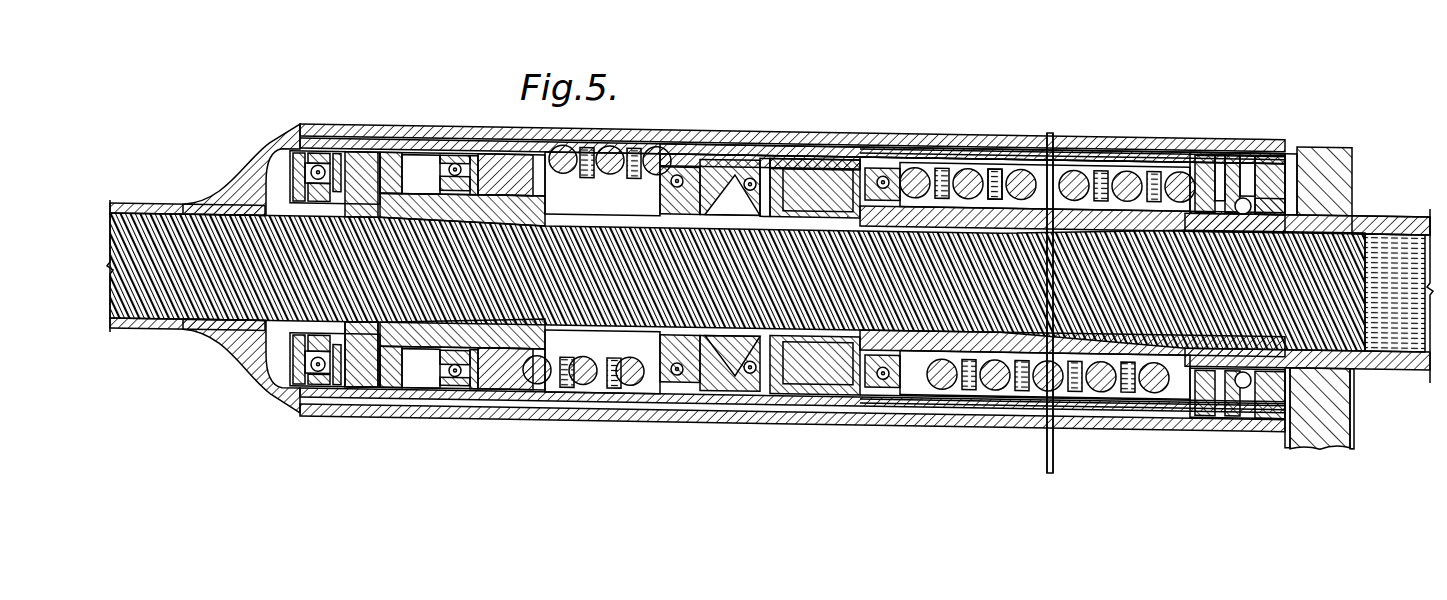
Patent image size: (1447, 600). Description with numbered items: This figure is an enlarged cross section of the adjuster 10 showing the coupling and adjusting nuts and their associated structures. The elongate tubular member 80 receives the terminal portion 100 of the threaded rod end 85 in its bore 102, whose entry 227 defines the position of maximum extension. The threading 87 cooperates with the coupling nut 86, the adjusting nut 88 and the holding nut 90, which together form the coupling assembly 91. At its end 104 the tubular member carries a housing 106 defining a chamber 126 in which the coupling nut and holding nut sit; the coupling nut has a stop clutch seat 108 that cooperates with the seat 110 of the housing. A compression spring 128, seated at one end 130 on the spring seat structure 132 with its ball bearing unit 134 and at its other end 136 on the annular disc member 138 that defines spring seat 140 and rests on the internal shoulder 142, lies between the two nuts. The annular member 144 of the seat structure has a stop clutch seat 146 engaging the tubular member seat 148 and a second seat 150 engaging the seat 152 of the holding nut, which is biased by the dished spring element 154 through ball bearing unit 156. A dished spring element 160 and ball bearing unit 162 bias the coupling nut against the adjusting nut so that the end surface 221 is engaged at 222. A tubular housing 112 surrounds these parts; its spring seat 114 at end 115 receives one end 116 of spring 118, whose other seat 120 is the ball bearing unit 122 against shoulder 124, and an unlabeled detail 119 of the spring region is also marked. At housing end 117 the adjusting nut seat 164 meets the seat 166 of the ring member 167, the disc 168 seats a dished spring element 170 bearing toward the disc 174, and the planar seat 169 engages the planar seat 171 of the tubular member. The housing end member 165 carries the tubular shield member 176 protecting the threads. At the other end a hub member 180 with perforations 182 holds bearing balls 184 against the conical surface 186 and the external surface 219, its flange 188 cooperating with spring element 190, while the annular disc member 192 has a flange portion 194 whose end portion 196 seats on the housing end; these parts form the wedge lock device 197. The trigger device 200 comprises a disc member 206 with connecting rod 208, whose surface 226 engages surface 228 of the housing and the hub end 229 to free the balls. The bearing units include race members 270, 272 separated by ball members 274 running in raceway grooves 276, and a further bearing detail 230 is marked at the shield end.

The adjuster 10 is at (204, 56).
The tubular member 80 is at (1362, 214).
The rod member end 85 is at (1352, 396).
The coupling nut 86 is at (388, 112).
The threading 87 is at (232, 322).
The adjusting nut 88 is at (245, 180).
The holding nut 90 is at (735, 128).
The coupling assembly 91 is at (812, 100).
The terminal portion 100 is at (1395, 255).
The bore 102 is at (1300, 228).
The tubular member end 104 is at (856, 130).
The housing 106 is at (665, 128).
The stop clutch seat 108 is at (357, 112).
The stop clutch seat 110 is at (330, 112).
The tubular housing 112 is at (950, 130).
The spring seat 114 is at (1165, 135).
The housing end 115 is at (1240, 135).
The spring end 116 is at (1160, 142).
The housing end 117 is at (310, 112).
The spring 118 is at (1075, 130).
The ball bearing 119 is at (930, 130).
The spring seat 120 is at (912, 408).
The ball bearing unit 122 is at (872, 420).
The shoulder 124 is at (845, 420).
The chamber 126 is at (582, 422).
The compression spring 128 is at (612, 148).
The spring end 130 is at (660, 128).
The spring seat structure 132 is at (695, 128).
The ball bearing unit 134 is at (700, 400).
The spring end 136 is at (500, 420).
The annular disc member 138 is at (472, 420).
The spring seat 140 is at (498, 112).
The internal shoulder 142 is at (470, 112).
The annular member 144 is at (778, 130).
The stop clutch seat 146 is at (795, 130).
The stop clutch seat 148 is at (818, 130).
The stop clutch seat 150 is at (748, 128).
The stop clutch seat 152 is at (730, 420).
The compression spring element 154 is at (830, 420).
The ball bearing unit 156 is at (785, 420).
The compression spring element 160 is at (458, 418).
The ball bearing unit 162 is at (420, 112).
The stop clutch seat 164 is at (332, 415).
The housing end member 165 is at (292, 140).
The stop clutch seat 166 is at (302, 402).
The ring member 167 is at (302, 110).
The disc 168 is at (295, 112).
The stop clutch seat 169 is at (330, 412).
The compression spring element 170 is at (272, 112).
The stop clutch seat 171 is at (362, 420).
The disc 174 is at (287, 378).
The tubular shield member 176 is at (145, 200).
The hub member 180 is at (1275, 135).
The perforations 182 is at (1252, 425).
The bearing balls 184 is at (1202, 425).
The conical surface 186 is at (1255, 135).
The flange 188 is at (1163, 422).
The compression spring element 190 is at (1200, 135).
The annular disc member 192 is at (1128, 420).
The flange portion 194 is at (1228, 425).
The end portion 196 is at (1222, 135).
The wedge lock device 197 is at (1265, 135).
The trigger device 200 is at (1090, 0).
The disc member 206 is at (1352, 152).
The connecting rod 208 is at (1013, 100).
The external surface 219 is at (1352, 212).
The end surface 221 is at (462, 209).
The engagement 222 is at (462, 332).
The surface 226 is at (1293, 450).
The entry 227 is at (886, 130).
The surface 228 is at (1287, 432).
The hub end 229 is at (1288, 135).
The ball bearing 230 is at (305, 394).
The race member 270 is at (640, 466).
The race member 272 is at (235, 462).
The ball members 274 is at (442, 112).
The raceway grooves 276 is at (712, 505).